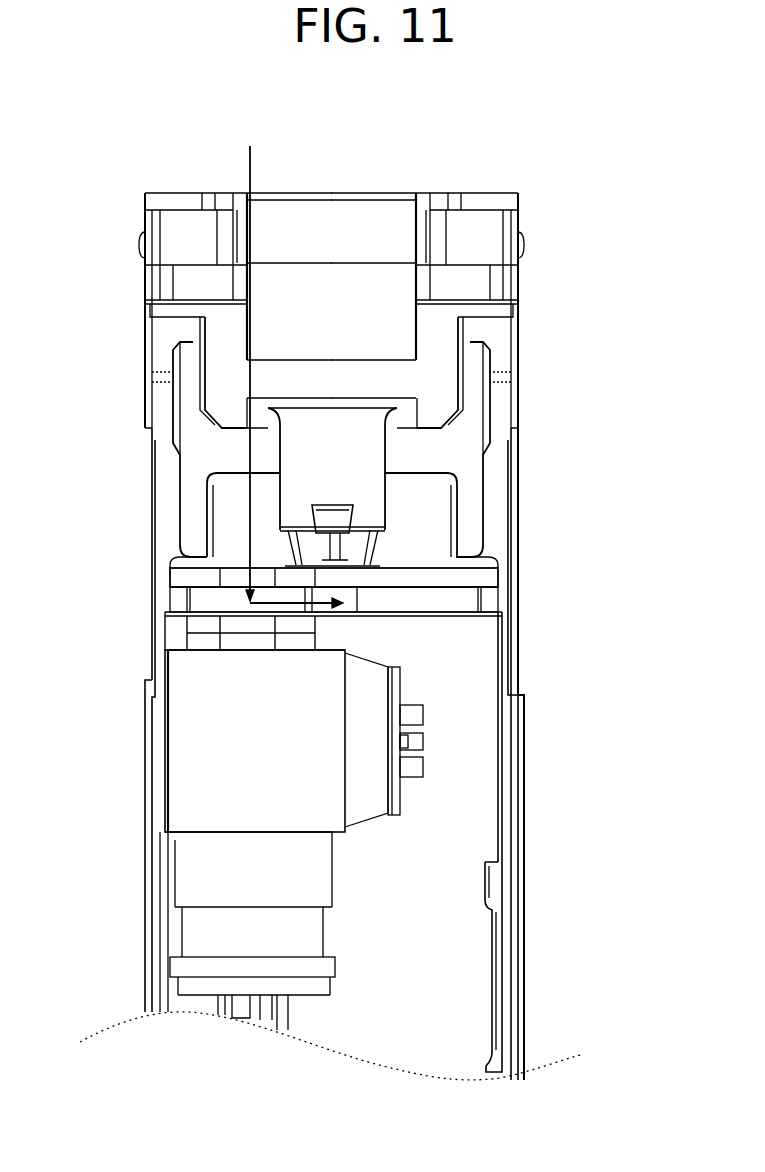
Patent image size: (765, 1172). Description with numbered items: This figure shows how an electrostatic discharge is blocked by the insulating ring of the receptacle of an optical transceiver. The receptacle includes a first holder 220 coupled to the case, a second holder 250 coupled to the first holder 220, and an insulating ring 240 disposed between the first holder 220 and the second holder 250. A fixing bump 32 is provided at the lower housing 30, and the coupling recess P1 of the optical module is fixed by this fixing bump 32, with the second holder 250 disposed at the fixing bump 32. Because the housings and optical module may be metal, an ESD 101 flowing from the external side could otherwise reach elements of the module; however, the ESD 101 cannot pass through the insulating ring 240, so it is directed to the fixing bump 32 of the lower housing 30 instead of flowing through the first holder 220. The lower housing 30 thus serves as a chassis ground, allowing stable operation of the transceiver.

The lower housing 30 is at (552, 641).
The fixing bump 32 is at (490, 576).
The ESD 101 is at (288, 365).
The first holder 220 is at (192, 653).
The insulating ring 240 is at (190, 622).
The second holder 250 is at (188, 488).
The coupling recess P1 is at (170, 592).